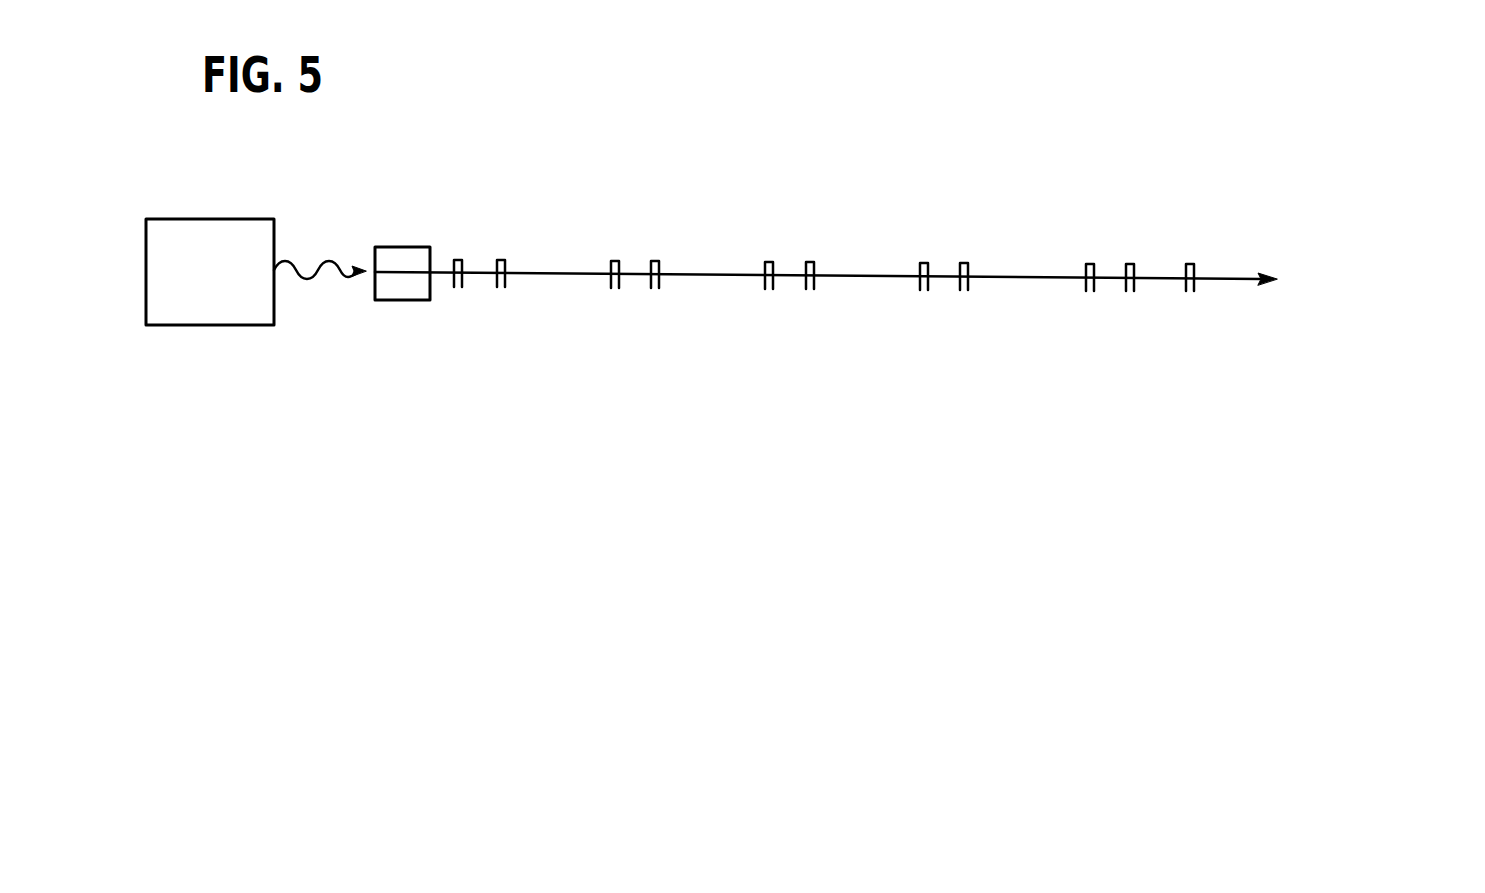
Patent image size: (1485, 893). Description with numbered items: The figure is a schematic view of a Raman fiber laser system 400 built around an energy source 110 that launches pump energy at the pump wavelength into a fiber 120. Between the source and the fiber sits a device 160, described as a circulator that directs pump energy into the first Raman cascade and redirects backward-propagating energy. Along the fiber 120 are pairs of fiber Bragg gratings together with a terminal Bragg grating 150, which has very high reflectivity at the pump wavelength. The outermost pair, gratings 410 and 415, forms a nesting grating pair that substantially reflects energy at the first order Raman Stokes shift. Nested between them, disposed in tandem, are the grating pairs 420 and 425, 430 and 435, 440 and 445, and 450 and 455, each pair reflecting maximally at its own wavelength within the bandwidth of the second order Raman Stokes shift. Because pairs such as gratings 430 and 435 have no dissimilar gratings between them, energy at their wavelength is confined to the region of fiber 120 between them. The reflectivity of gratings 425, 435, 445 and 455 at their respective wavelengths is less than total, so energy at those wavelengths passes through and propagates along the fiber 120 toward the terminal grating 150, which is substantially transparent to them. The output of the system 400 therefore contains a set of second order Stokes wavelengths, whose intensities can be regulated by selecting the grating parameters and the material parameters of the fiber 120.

The energy source 110 is at (179, 289).
The fiber 120 is at (477, 276).
The device 160 is at (398, 247).
The fiber Bragg grating 410 is at (456, 259).
The fiber Bragg grating 420 is at (501, 259).
The fiber Bragg grating 425 is at (614, 260).
The fiber Bragg grating 430 is at (656, 260).
The fiber Bragg grating 435 is at (769, 261).
The fiber Bragg grating 440 is at (811, 261).
The fiber Bragg grating 445 is at (925, 262).
The fiber Bragg grating 450 is at (966, 262).
The fiber Bragg grating 455 is at (1090, 263).
The fiber Bragg grating 415 is at (1131, 263).
The Bragg grating 150 is at (1191, 263).
The Raman fiber laser system 400 is at (1177, 444).